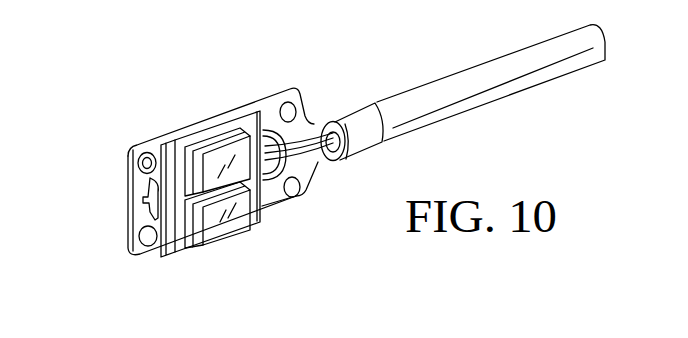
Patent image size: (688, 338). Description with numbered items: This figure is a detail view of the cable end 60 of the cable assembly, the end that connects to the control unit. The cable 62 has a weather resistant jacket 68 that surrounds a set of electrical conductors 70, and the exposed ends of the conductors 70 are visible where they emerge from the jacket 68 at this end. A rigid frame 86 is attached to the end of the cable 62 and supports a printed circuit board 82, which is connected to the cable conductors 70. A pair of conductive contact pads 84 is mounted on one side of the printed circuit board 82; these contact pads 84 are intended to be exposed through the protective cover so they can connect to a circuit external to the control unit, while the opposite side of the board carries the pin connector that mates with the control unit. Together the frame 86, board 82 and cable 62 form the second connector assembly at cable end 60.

The cable end 60 is at (336, 165).
The cable 62 is at (403, 103).
The weather resistant jacket 68 is at (332, 167).
The electrical conductors 70 is at (307, 158).
The printed circuit board 82 is at (178, 242).
The conductive contact pads 84 is at (226, 172).
The rigid frame 86 is at (140, 220).